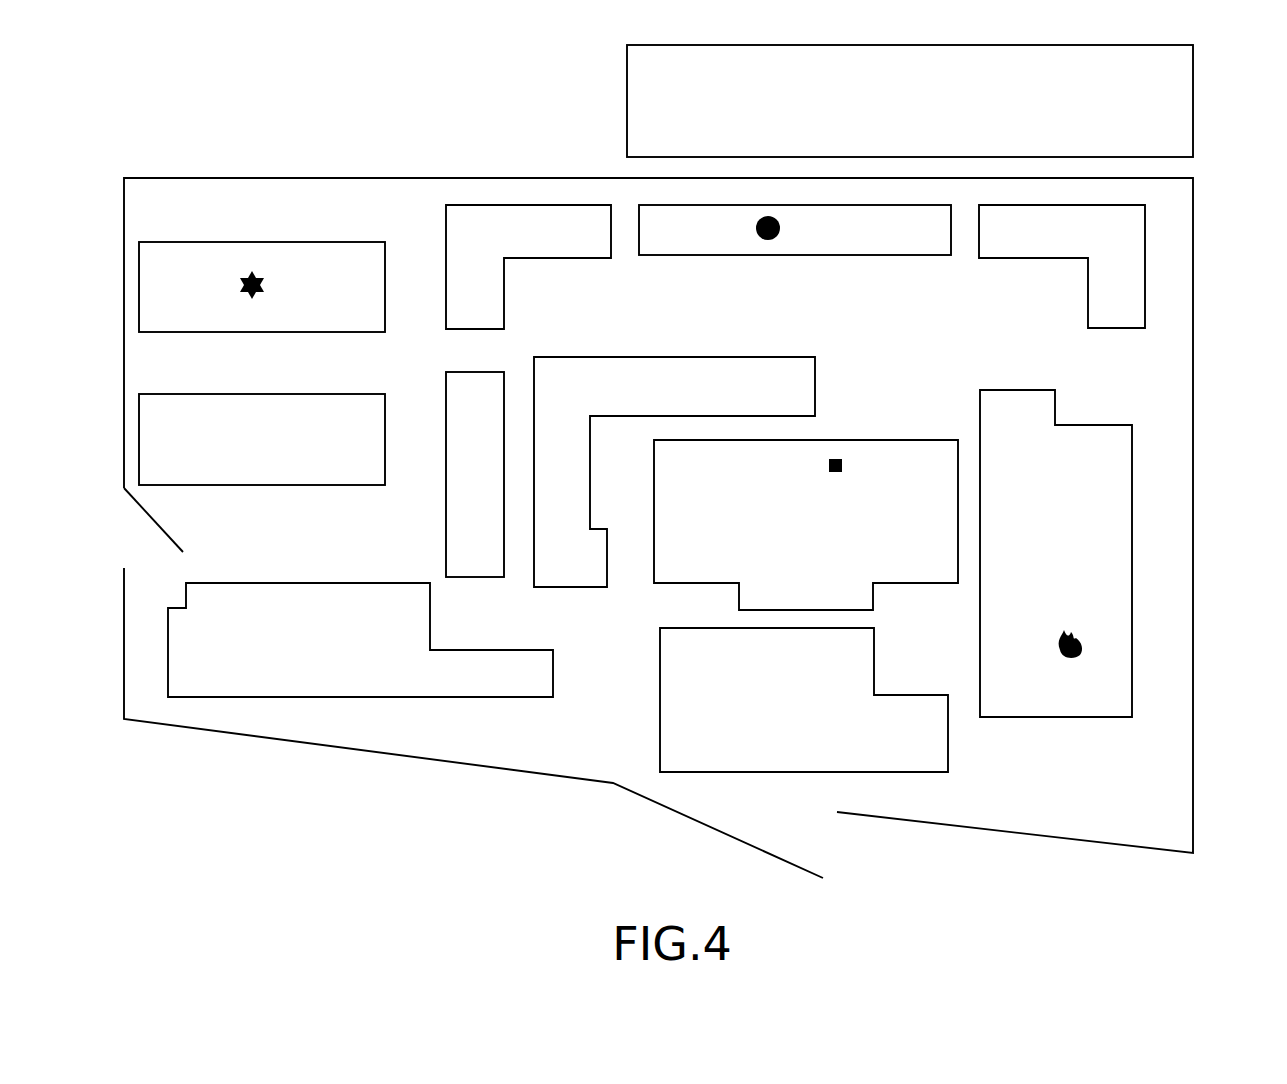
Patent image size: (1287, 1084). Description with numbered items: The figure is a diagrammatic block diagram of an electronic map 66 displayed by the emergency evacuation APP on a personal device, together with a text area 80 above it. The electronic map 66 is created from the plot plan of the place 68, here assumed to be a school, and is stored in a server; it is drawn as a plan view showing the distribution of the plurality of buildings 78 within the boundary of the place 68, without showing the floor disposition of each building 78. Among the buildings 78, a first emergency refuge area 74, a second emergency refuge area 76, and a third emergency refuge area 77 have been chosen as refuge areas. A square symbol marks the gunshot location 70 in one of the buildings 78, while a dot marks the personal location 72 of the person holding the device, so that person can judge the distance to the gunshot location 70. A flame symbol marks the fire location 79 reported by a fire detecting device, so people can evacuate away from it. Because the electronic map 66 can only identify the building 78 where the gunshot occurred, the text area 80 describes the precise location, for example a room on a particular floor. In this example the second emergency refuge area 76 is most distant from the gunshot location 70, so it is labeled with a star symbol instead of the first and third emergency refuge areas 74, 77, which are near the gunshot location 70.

The electronic map 66 is at (221, 818).
The place 68 is at (420, 178).
The gunshot location 70 is at (838, 462).
The personal location 72 is at (772, 240).
The first emergency refuge area 74 is at (898, 772).
The second emergency refuge area 76 is at (248, 274).
The third emergency refuge area 77 is at (414, 697).
The buildings 78 is at (347, 242).
The fire location 79 is at (1083, 651).
The text area 80 is at (1193, 100).